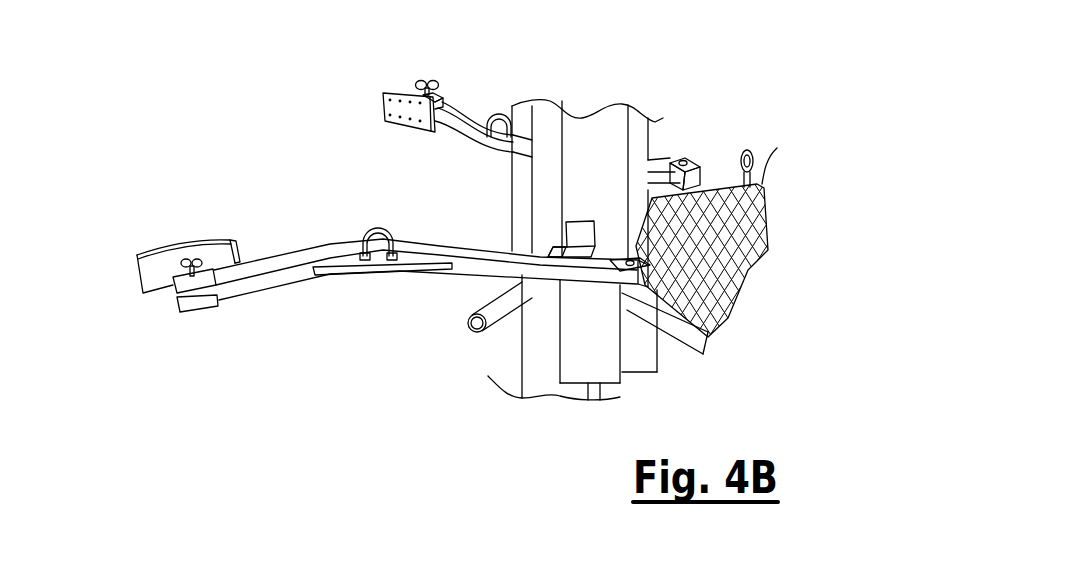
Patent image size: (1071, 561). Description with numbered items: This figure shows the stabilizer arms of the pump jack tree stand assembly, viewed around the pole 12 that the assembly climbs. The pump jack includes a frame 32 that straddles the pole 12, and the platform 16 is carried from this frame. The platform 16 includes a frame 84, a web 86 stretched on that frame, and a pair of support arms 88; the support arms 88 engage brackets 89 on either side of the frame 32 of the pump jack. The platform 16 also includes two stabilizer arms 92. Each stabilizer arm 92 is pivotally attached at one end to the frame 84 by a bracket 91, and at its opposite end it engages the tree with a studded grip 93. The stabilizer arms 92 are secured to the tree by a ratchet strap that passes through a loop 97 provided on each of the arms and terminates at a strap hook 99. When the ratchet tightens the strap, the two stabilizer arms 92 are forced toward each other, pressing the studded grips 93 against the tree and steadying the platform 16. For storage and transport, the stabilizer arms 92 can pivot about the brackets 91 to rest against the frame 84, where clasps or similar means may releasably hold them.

The pole 12 is at (529, 350).
The platform 16 is at (740, 100).
The frame 32 is at (615, 163).
The frame 84 is at (697, 341).
The web 86 is at (747, 248).
The support arms 88 is at (550, 250).
The brackets 89 is at (573, 222).
The brackets 91 is at (677, 158).
The stabilizer arms 92 is at (467, 118).
The studded grips 93 is at (393, 92).
The loop 97 is at (514, 118).
The strap hook 99 is at (747, 148).